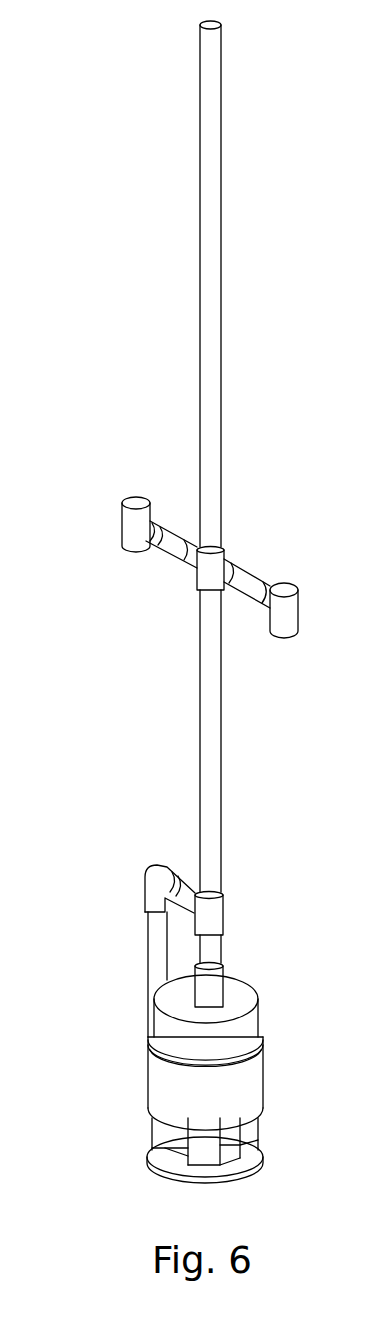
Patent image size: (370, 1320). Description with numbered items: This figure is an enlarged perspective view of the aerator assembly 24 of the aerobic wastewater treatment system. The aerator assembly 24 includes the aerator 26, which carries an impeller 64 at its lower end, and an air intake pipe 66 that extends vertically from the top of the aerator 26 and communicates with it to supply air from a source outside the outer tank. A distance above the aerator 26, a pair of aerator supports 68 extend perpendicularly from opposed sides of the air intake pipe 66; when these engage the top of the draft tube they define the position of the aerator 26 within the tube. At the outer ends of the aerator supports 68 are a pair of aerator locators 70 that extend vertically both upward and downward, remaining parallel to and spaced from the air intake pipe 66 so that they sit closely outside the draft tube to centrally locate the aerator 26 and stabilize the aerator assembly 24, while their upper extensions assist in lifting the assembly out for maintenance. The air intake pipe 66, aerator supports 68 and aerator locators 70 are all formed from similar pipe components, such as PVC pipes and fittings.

The aerator assembly 24 is at (248, 305).
The air intake pipe 66 is at (220, 193).
The aerator supports 68 is at (168, 558).
The aerator locators 70 is at (120, 523).
The aerator 26 is at (265, 1060).
The impeller 64 is at (228, 1175).